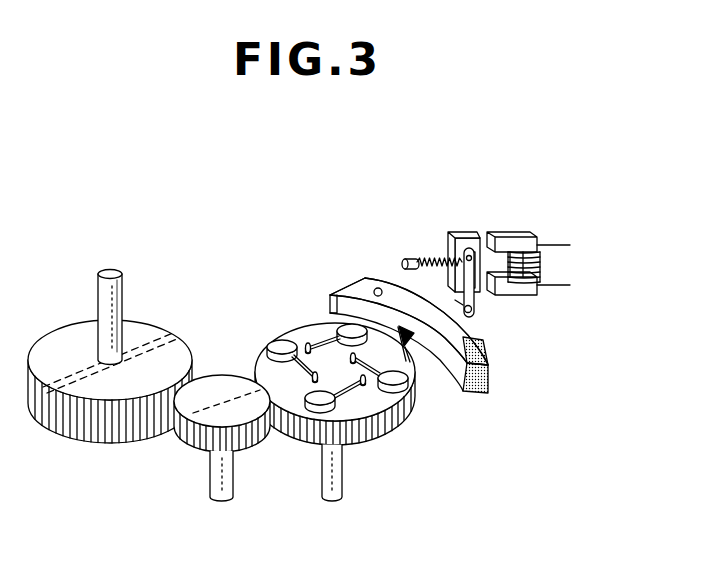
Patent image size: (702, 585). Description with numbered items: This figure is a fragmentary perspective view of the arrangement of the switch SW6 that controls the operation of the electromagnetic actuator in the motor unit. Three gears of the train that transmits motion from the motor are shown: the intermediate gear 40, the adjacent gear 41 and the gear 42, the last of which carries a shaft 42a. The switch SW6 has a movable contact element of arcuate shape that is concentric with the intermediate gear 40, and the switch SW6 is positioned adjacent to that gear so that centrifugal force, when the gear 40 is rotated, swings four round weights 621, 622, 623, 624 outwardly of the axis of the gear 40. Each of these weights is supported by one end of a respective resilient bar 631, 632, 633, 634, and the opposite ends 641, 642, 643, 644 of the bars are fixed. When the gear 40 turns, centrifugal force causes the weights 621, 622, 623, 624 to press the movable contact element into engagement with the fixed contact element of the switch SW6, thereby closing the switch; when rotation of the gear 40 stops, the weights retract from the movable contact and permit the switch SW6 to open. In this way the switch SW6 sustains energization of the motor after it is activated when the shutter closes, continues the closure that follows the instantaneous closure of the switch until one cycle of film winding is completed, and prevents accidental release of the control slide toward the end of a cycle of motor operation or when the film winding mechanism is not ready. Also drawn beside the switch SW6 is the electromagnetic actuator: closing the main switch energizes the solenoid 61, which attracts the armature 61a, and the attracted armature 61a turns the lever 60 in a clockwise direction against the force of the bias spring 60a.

The intermediate gear 40 is at (382, 423).
The gear 41 is at (202, 442).
The gear 42 is at (95, 432).
The shaft of disc 42 42a is at (100, 293).
The lever 60 is at (470, 297).
The bias spring 60a is at (433, 258).
The solenoid 61 is at (512, 240).
The armature 61a is at (467, 240).
The switch SW6 is at (387, 292).
The round weight 621 is at (407, 383).
The round weight 622 is at (322, 400).
The round weight 623 is at (267, 345).
The round weight 624 is at (318, 340).
The resilient bar 631 is at (357, 360).
The resilient bar 632 is at (348, 393).
The resilient bar 633 is at (313, 378).
The resilient bar 634 is at (307, 345).
The fixed end of resilient bar 641 is at (355, 337).
The fixed end of resilient bar 642 is at (378, 378).
The fixed end of resilient bar 643 is at (315, 380).
The fixed end of resilient bar 644 is at (270, 342).